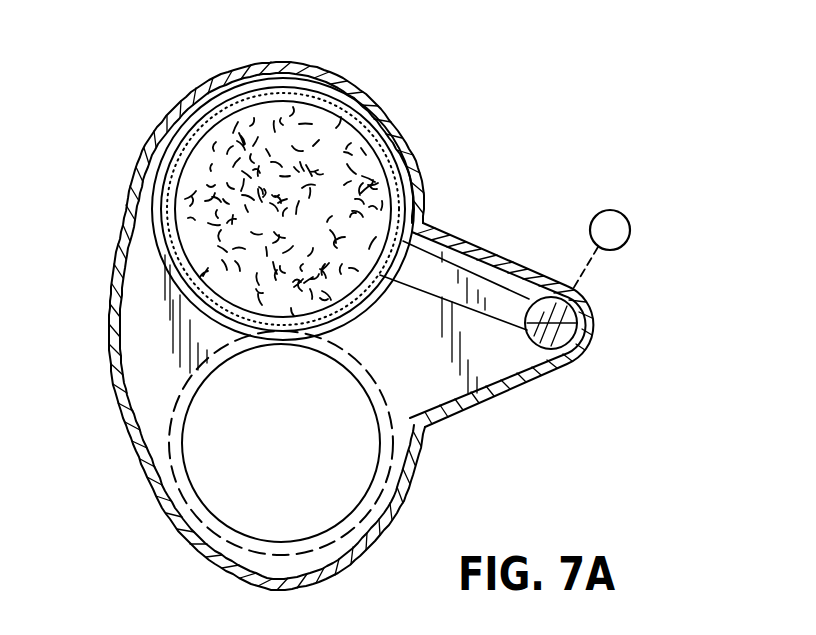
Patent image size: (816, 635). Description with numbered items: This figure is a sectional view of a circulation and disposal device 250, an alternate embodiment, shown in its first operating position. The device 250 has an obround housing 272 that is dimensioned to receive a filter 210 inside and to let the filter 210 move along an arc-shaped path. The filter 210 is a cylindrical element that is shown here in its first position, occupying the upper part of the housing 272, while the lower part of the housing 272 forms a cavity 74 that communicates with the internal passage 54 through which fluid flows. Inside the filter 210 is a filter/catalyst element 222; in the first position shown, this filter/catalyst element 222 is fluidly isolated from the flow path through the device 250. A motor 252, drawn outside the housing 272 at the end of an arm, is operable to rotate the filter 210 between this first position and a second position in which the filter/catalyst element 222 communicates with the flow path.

The obround housing 272 is at (289, 60).
The circulation and disposal device 250 is at (474, 127).
The motor 252 is at (629, 220).
The filter 210 is at (150, 258).
The filter/catalyst element 222 is at (327, 140).
The cavity 74 is at (152, 415).
The internal passage 54 is at (242, 500).